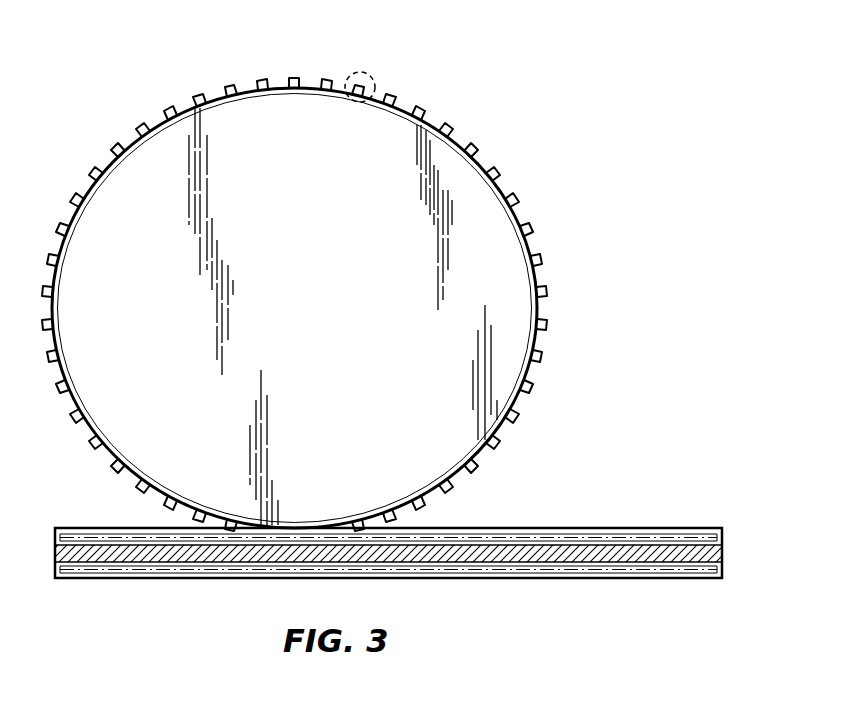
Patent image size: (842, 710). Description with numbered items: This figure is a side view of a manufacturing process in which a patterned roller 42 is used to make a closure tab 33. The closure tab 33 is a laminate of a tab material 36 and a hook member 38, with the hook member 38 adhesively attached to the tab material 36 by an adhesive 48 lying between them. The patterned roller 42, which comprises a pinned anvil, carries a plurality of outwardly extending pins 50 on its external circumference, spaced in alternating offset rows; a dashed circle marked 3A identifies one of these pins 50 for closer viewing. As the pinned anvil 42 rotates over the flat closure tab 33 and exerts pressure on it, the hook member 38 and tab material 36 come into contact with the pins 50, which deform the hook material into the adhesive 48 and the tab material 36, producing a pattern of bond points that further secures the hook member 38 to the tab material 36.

The detail view region of FIG. 3A is at (372, 68).
The patterned roller 42 is at (383, 165).
The pins 50 is at (517, 188).
The closure tab 33 is at (394, 547).
The hook member 38 is at (713, 538).
The adhesive 48 is at (723, 555).
The tab material 36 is at (712, 568).